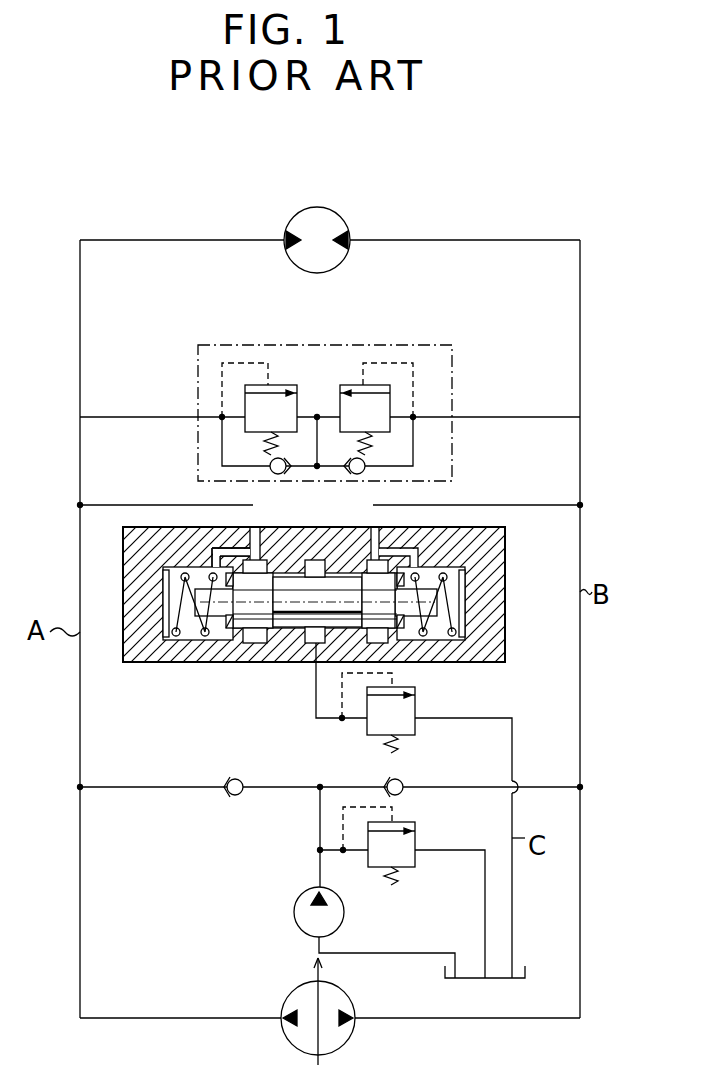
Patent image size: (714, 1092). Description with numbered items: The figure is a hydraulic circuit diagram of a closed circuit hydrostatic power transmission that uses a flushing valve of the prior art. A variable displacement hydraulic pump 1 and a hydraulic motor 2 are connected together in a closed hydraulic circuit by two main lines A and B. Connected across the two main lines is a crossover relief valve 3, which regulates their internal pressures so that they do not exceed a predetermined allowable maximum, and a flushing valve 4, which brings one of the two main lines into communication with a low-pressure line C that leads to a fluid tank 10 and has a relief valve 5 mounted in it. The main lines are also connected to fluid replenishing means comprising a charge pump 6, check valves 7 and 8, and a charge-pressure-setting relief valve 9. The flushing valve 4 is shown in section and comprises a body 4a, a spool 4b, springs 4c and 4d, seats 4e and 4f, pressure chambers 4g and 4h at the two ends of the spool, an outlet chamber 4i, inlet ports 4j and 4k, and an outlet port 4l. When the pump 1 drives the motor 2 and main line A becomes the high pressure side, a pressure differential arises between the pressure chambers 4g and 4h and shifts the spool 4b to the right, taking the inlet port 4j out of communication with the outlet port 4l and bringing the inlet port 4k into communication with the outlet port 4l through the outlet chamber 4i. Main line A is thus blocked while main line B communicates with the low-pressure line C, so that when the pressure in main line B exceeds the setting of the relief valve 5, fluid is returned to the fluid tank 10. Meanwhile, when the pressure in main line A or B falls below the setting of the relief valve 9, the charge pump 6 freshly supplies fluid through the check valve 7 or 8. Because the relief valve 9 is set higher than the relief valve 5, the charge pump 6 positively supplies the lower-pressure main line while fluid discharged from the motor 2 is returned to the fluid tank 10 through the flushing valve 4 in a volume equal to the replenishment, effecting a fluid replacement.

The variable displacement hydraulic pump 1 is at (302, 1046).
The hydraulic motor 2 is at (338, 222).
The crossover relief valve 3 is at (452, 372).
The flushing valve 4 is at (320, 608).
The body 4a is at (135, 663).
The spool 4b is at (280, 630).
The spring 4c is at (178, 640).
The spring 4d is at (455, 640).
The seat 4e is at (229, 640).
The seat 4f is at (401, 640).
The pressure chamber 4g is at (165, 570).
The pressure chamber 4h is at (465, 573).
The outlet chamber 4i is at (290, 570).
The inlet port 4j is at (262, 540).
The inlet port 4k is at (366, 540).
The outlet port 4l is at (310, 663).
The relief valve 5 is at (415, 731).
The charge pump 6 is at (307, 893).
The check valve 7 is at (228, 780).
The check valve 8 is at (404, 779).
The charge-pressure-setting relief valve 9 is at (416, 866).
The fluid tank 10 is at (524, 967).